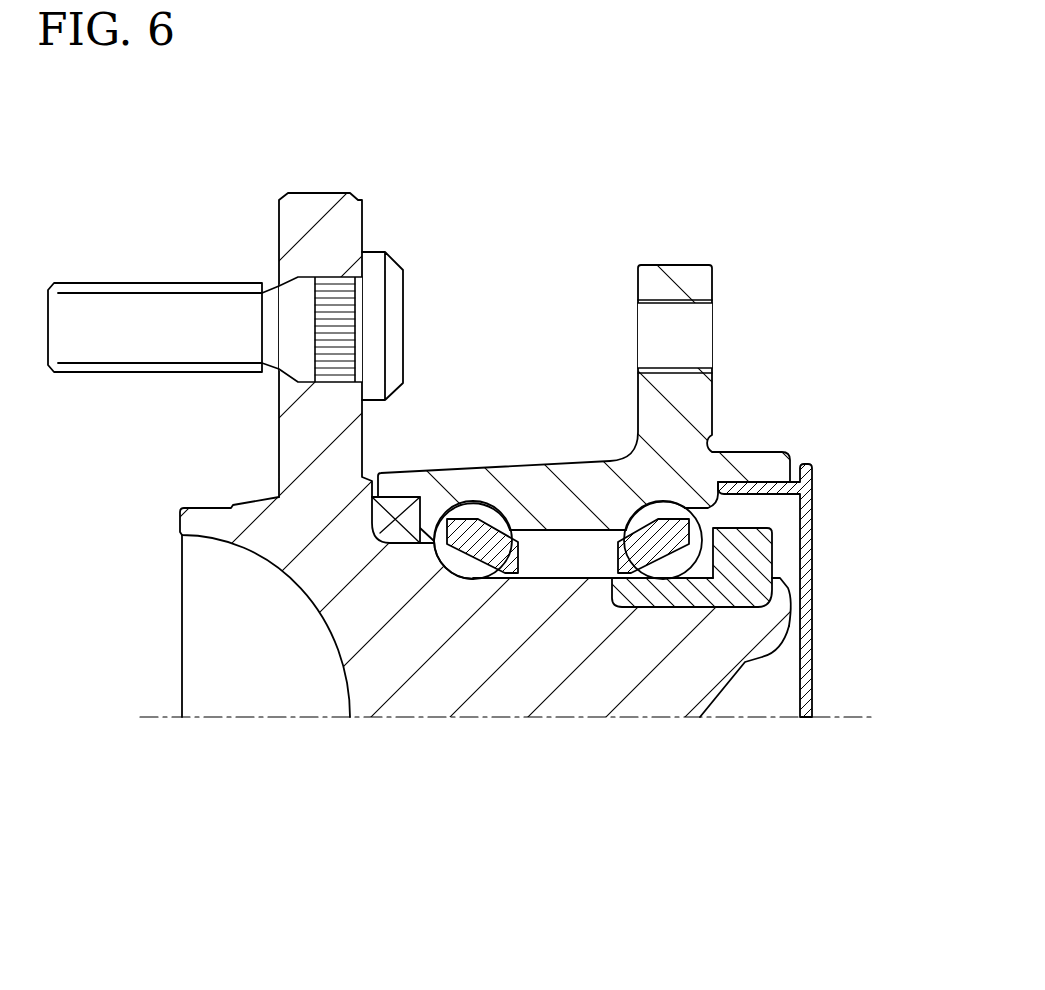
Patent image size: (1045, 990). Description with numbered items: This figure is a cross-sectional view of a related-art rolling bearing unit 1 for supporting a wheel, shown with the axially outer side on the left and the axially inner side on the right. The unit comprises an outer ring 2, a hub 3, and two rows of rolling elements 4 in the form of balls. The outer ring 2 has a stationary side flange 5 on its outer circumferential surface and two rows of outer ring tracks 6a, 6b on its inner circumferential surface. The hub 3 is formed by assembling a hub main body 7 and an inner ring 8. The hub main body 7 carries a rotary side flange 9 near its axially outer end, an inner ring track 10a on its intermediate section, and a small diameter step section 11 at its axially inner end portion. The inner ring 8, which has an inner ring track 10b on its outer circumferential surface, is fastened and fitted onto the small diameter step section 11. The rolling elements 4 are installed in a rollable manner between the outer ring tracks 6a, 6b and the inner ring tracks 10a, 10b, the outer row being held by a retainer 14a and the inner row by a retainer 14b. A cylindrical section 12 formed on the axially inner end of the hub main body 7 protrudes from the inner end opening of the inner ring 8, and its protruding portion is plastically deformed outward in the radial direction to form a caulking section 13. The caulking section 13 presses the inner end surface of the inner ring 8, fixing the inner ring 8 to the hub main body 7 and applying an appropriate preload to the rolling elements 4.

The rolling bearing unit for supporting a wheel 1 is at (372, 183).
The outer ring 2 is at (538, 488).
The hub 3 is at (415, 698).
The rolling elements 4 is at (458, 568).
The stationary side flange 5 is at (683, 275).
The outer ring track 6a is at (478, 512).
The outer ring track 6b is at (672, 508).
The hub main body 7 is at (348, 633).
The inner ring 8 is at (762, 556).
The rotary side flange 9 is at (301, 206).
The inner ring track 10a is at (453, 558).
The inner ring track 10b is at (752, 630).
The small diameter step section 11 is at (717, 597).
The cylindrical section 12 is at (775, 652).
The caulking section 13 is at (803, 592).
The retainer 14a is at (513, 578).
The retainer 14b is at (655, 580).